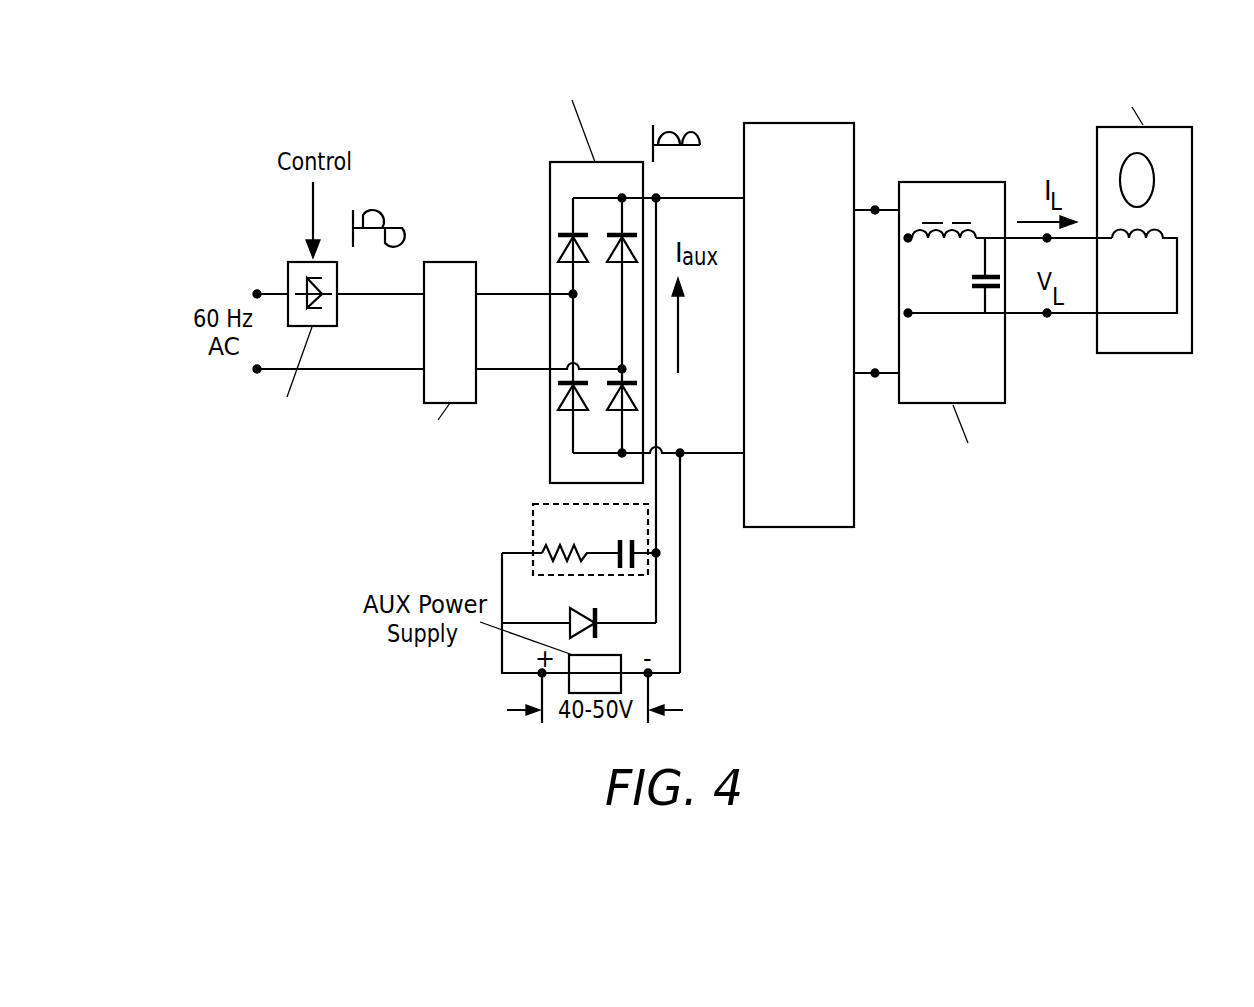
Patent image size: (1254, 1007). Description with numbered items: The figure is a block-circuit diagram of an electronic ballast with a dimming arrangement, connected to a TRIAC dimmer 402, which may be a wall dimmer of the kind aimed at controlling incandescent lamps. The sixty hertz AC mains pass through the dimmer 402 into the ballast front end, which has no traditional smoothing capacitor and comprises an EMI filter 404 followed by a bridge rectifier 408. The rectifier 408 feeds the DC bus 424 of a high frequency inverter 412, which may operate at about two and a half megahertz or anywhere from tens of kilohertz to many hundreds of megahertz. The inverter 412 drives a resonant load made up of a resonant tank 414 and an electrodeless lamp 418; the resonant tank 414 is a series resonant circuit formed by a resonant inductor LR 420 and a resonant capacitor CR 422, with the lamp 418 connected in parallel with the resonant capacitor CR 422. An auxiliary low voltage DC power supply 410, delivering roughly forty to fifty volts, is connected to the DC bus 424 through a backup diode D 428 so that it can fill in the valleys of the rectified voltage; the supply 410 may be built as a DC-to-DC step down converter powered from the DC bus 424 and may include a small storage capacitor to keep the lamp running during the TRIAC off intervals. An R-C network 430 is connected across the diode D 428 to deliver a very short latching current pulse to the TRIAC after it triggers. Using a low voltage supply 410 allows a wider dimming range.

The TRIAC dimmer 402 is at (337, 310).
The EMI filter 404 is at (448, 262).
The bridge rectifier 408 is at (565, 162).
The auxiliary DC power supply 410 is at (608, 655).
The high frequency inverter 412 is at (797, 123).
The resonant tank 414 is at (971, 317).
The electrodeless lamp 418 is at (1180, 125).
The resonant inductor LR 420 is at (978, 228).
The resonant capacitor CR 422 is at (972, 275).
The DC bus 424 is at (723, 197).
The backup diode D 428 is at (573, 610).
The R-C network 430 is at (533, 515).